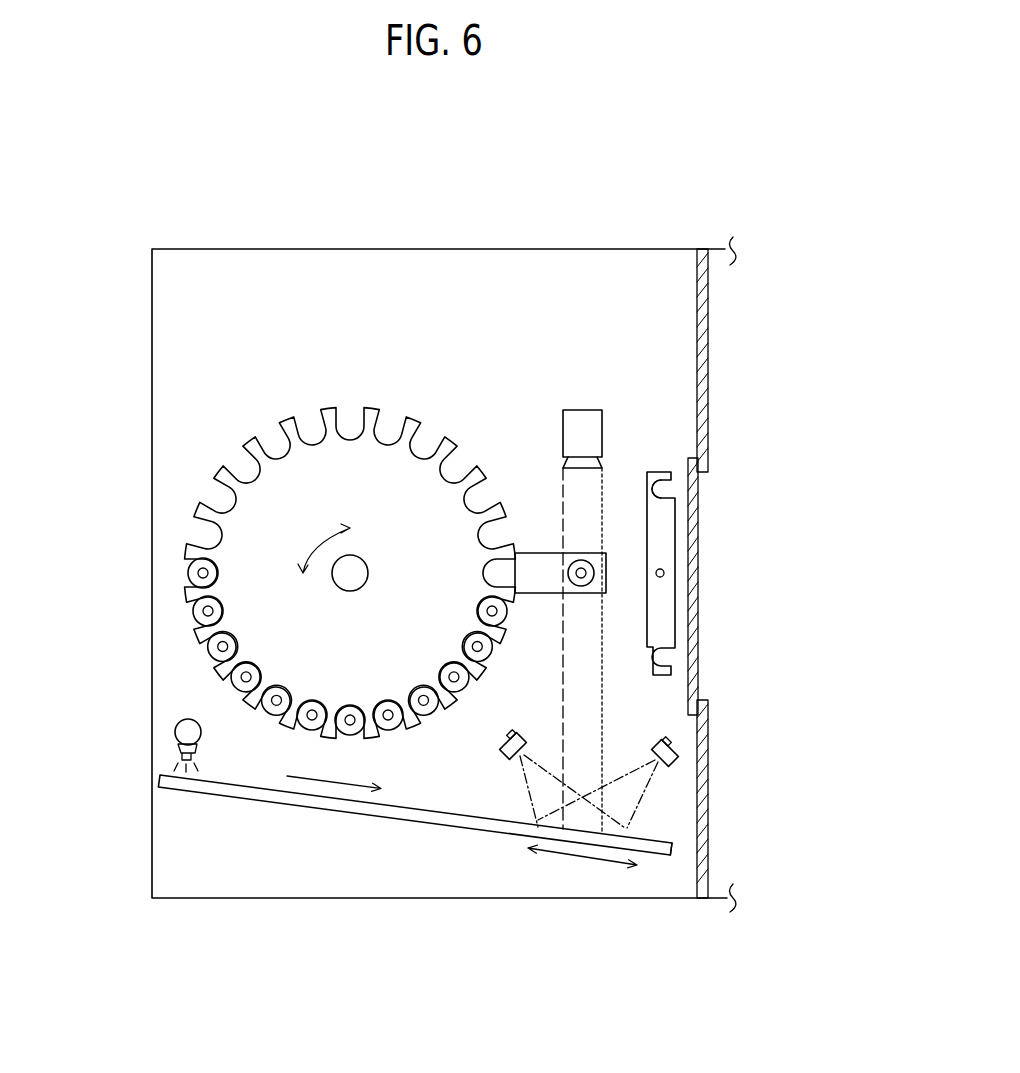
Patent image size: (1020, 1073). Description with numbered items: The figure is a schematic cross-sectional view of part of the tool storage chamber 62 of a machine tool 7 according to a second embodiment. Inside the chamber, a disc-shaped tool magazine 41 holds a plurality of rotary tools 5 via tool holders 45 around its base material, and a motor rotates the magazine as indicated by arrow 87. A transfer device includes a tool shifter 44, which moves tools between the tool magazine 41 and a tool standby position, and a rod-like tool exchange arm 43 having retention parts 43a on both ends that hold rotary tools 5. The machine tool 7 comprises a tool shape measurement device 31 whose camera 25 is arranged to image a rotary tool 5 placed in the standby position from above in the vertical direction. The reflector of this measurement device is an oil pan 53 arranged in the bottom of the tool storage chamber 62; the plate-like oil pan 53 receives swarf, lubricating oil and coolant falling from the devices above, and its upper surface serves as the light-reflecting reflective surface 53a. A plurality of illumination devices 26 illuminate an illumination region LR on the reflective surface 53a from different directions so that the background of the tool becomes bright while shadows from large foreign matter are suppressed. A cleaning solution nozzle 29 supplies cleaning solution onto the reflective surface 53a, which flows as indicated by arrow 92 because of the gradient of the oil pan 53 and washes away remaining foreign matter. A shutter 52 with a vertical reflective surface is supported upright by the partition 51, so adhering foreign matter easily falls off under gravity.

The machine tool 7 is at (652, 234).
The tool storage chamber 62 is at (205, 266).
The partition 51 is at (708, 320).
The shutter 52 is at (699, 488).
The tool shape measurement device 31 is at (637, 429).
The tool magazine 41 is at (250, 447).
The arrow 87 is at (313, 548).
The rotary tool 5 is at (205, 613).
The tool holder 45 is at (202, 573).
The tool shifter 44 is at (548, 560).
The camera 25 is at (585, 427).
The tool exchange arm 43 is at (665, 633).
The retention part 43a is at (654, 489).
The illumination device 26 is at (680, 752).
The cleaning solution nozzle 29 is at (176, 727).
The oil pan 53 is at (273, 797).
The reflective surface 53a is at (675, 845).
The arrow 92 is at (332, 783).
The illumination region LR is at (577, 868).